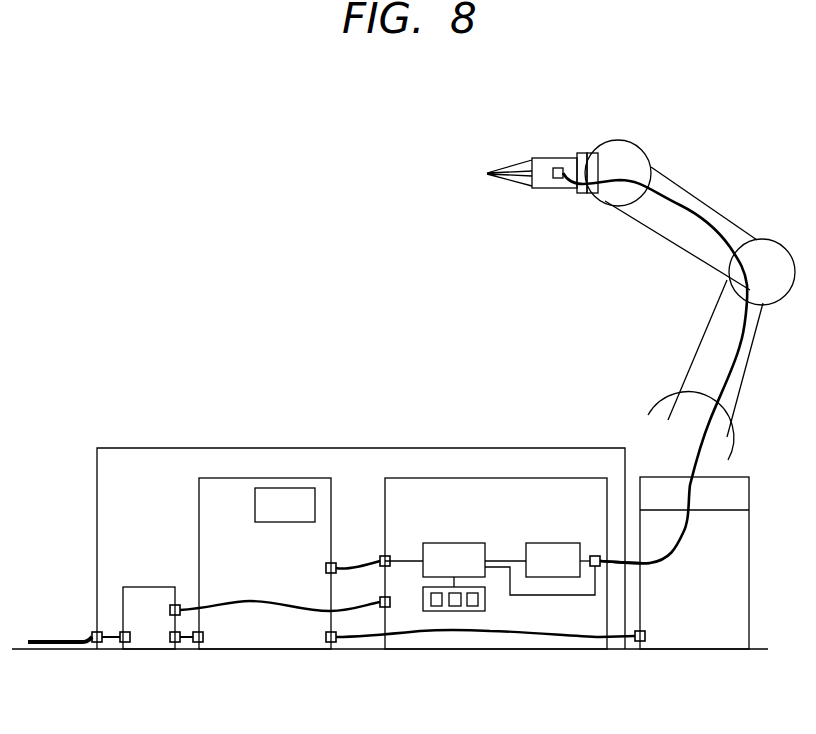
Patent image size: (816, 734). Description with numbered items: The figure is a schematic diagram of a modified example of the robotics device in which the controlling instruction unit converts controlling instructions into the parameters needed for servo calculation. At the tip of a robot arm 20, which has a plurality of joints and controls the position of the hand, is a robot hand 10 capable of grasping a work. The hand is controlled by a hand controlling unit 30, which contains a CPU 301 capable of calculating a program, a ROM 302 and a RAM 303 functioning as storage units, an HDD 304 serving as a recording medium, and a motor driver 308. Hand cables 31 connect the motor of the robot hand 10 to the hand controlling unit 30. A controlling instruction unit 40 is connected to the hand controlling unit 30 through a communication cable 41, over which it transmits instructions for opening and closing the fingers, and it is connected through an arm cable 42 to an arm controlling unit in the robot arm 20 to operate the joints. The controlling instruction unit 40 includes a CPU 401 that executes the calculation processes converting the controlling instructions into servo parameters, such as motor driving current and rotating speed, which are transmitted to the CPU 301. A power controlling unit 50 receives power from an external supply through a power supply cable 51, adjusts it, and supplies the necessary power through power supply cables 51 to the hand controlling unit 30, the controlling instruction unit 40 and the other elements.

The robot hand 10 is at (542, 100).
The robot arm 20 is at (723, 220).
The hand controlling unit 30 is at (572, 477).
The CPU 301 is at (453, 542).
The ROM 302 is at (420, 668).
The RAM 303 is at (462, 692).
The HDD 304 is at (497, 668).
The motor driver 308 is at (567, 540).
The hand cables 31 is at (657, 570).
The controlling instruction unit 40 is at (230, 477).
The CPU 401 is at (300, 487).
The communication cable 41 is at (353, 563).
The arm cable 42 is at (577, 678).
The power controlling unit 50 is at (152, 585).
The power supply cables 51 is at (63, 640).